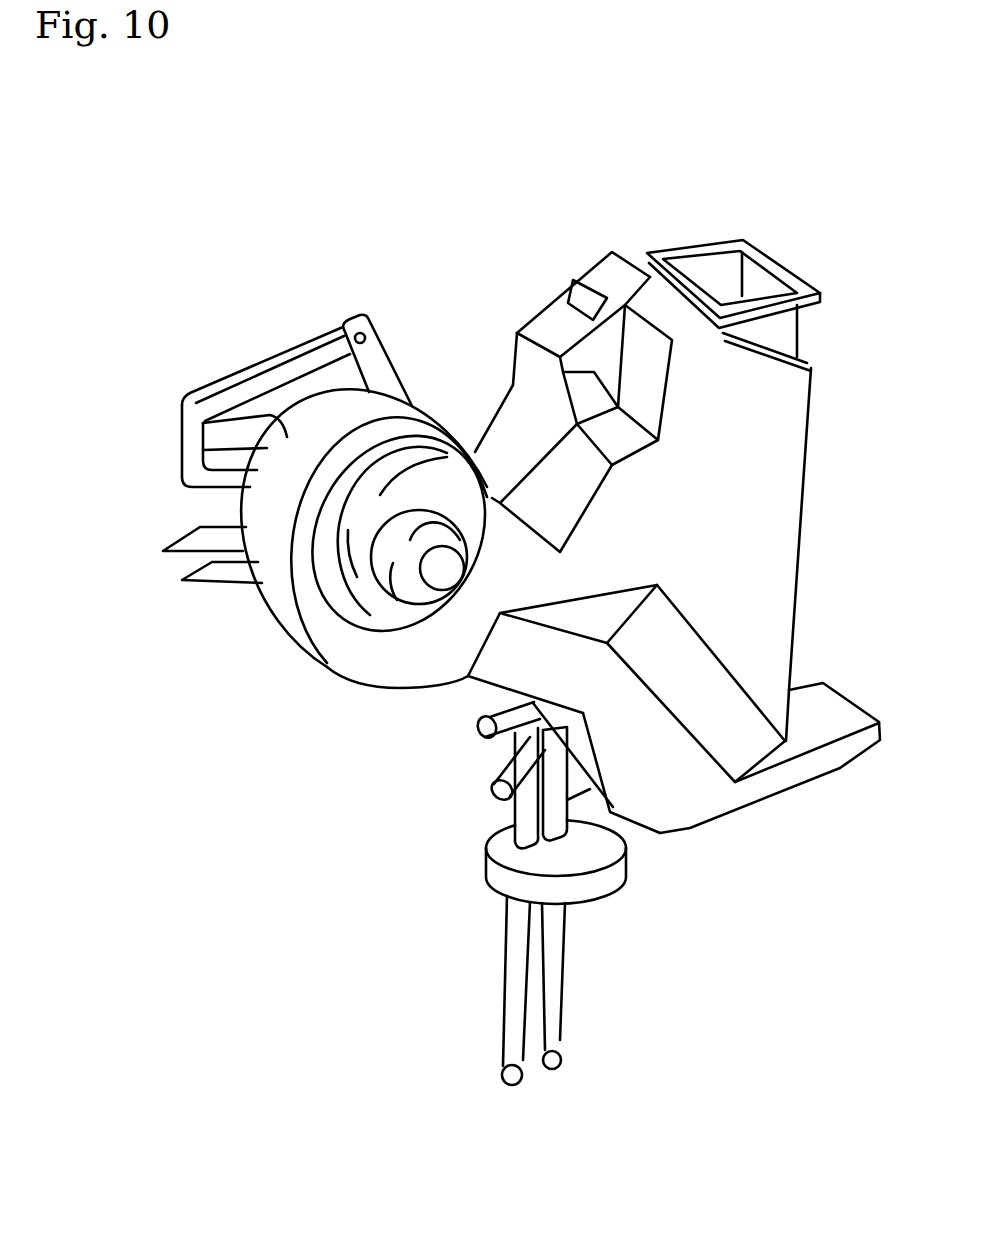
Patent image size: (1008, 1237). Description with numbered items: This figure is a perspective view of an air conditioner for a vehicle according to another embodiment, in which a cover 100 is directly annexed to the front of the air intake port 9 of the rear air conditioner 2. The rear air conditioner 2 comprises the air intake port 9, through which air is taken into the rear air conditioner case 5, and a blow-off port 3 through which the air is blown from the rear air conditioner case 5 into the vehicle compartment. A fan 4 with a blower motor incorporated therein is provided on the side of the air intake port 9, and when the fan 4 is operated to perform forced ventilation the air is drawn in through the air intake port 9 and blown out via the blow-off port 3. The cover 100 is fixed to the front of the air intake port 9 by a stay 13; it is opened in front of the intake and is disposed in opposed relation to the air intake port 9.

The cover 100 is at (218, 390).
The air intake port 9 is at (205, 433).
The stay 13 is at (383, 374).
The fan 4 is at (347, 585).
The rear air conditioner 2 is at (327, 666).
The blow-off port 3 is at (767, 277).
The rear air conditioner case 5 is at (767, 565).